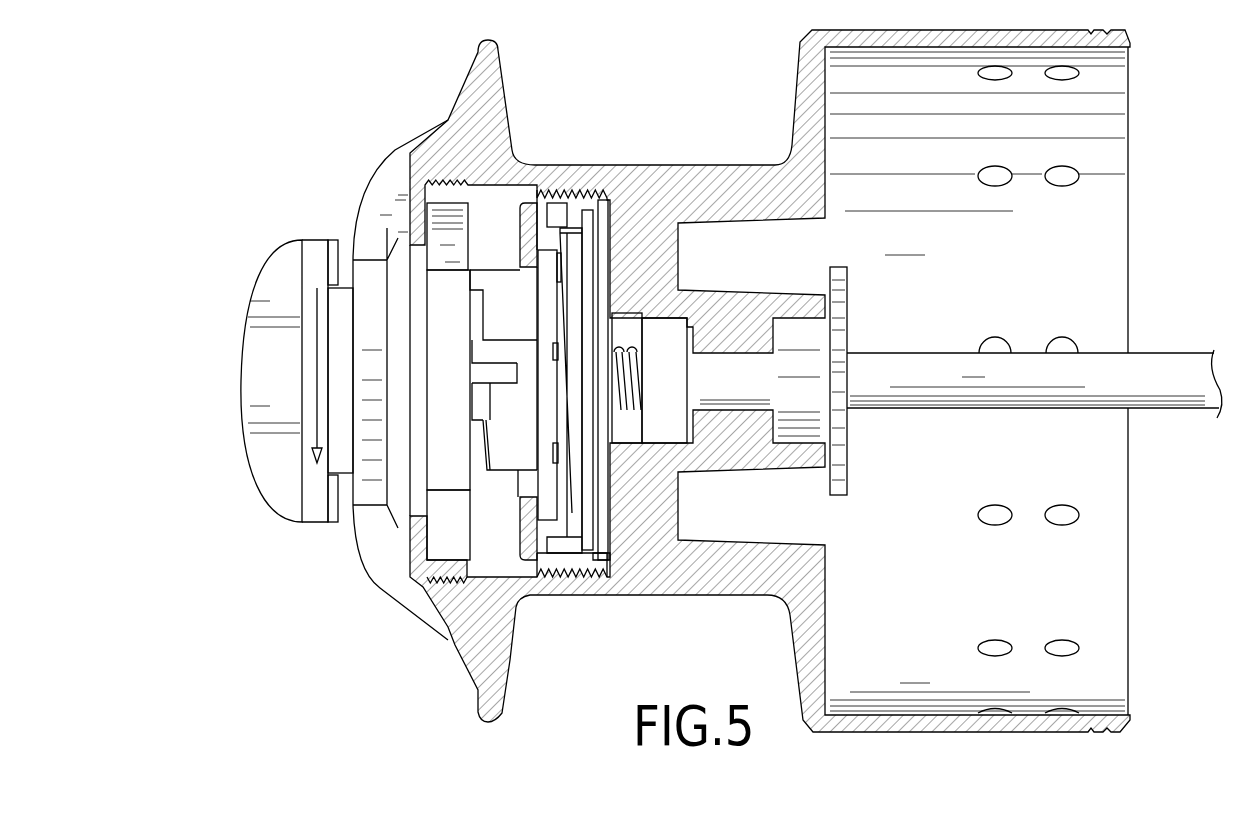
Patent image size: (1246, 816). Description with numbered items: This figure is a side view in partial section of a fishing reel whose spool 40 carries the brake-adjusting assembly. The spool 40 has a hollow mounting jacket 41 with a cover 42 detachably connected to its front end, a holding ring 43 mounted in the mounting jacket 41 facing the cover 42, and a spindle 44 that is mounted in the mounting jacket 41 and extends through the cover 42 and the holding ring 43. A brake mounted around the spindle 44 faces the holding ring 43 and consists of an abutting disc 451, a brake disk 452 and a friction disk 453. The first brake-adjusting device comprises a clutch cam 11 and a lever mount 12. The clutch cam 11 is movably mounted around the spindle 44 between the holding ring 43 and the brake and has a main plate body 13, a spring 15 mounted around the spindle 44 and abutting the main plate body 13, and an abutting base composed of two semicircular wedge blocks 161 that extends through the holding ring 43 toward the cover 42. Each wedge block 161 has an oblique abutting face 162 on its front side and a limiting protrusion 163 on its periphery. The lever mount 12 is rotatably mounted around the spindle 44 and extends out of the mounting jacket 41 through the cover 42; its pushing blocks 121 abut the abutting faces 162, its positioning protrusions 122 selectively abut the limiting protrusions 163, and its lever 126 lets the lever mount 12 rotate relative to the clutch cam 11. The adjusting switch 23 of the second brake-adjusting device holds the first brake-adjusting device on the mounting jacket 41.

The clutch cam 11 is at (458, 450).
The lever mount 12 is at (302, 342).
The main plate body 13 is at (547, 319).
The spring 15 is at (665, 378).
The adjusting switch 23 is at (251, 381).
The spool 40 is at (898, 360).
The mounting jacket 41 is at (770, 381).
The cover 42 is at (401, 610).
The holding ring 43 is at (562, 428).
The spindle 44 is at (1026, 381).
The pushing block 121 is at (459, 415).
The positioning protrusion 122 is at (504, 408).
The lever 126 is at (391, 367).
The wedge block 161 is at (483, 368).
The abutting face 162 is at (482, 458).
The limiting protrusion 163 is at (472, 342).
The abutting disc 451 is at (576, 326).
The brake disk 452 is at (612, 338).
The friction disk 453 is at (665, 380).